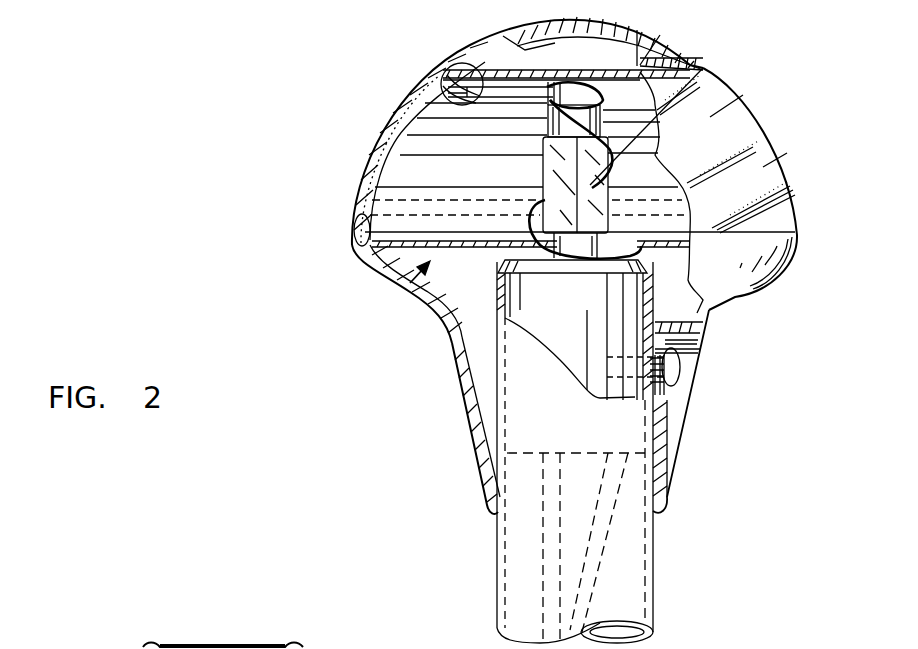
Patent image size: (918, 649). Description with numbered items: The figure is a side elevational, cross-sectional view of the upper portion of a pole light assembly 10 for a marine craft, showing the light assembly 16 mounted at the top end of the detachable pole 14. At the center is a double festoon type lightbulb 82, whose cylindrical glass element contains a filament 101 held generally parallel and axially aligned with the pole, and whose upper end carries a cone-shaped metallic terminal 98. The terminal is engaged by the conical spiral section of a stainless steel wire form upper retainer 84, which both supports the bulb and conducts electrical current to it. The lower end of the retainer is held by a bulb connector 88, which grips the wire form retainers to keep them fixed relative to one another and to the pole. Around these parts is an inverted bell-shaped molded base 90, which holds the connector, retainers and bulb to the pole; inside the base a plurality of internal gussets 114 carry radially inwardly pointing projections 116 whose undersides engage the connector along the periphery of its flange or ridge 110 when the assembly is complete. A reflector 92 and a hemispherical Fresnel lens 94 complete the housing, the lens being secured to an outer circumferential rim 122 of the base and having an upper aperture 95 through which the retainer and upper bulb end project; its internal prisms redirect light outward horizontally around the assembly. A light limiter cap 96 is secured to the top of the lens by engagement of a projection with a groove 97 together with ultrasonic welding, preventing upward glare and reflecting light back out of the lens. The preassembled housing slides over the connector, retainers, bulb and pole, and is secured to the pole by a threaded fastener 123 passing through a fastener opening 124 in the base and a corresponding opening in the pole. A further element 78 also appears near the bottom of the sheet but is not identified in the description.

The pole light assembly 10 is at (673, 545).
The detachable pole 14 is at (770, 646).
The light assembly 16 is at (407, 284).
The mounting plate 78 is at (258, 639).
The lightbulb 82 is at (546, 168).
The upper retainer 84 is at (703, 67).
The bulb connector 88 is at (572, 316).
The base 90 is at (467, 392).
The reflector 92 is at (405, 246).
The hemispherical lens 94 is at (760, 168).
The upper aperture 95 is at (455, 64).
The light limiter cap 96 is at (522, 27).
The groove 97 is at (443, 97).
The upper cone-shaped terminal 98 is at (652, 46).
The filament 101 is at (618, 184).
The flange or ridge 110 is at (725, 409).
The internal gussets 114 is at (468, 286).
The radially inwardly pointing projections 116 is at (497, 262).
The outer circumferential rim 122 is at (355, 220).
The threaded fastener 123 is at (678, 366).
The fastener opening 124 is at (668, 396).